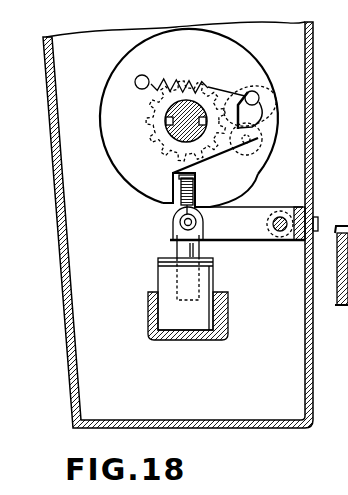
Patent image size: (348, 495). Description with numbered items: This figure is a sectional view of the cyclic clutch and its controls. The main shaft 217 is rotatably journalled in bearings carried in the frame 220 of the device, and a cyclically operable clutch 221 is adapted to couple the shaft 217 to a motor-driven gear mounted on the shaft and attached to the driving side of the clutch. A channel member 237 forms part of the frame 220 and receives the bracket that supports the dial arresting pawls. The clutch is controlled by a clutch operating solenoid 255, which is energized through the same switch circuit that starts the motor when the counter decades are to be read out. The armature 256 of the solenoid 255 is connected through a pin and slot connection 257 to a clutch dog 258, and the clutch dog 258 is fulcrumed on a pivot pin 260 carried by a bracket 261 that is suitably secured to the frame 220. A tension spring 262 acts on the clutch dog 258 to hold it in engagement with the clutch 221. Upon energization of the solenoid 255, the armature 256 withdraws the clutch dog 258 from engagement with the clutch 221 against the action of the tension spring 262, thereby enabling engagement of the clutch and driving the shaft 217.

The frame 220 is at (312, 170).
The cyclically operable clutch 221 is at (120, 56).
The main shaft 217 is at (177, 111).
The tension spring 262 is at (195, 187).
The clutch dog 258 is at (252, 216).
The bracket 261 is at (294, 210).
The pivot pin 260 is at (279, 233).
The pin and slot connection 257 is at (177, 222).
The armature 256 is at (178, 244).
The clutch operating solenoid 255 is at (166, 276).
The channel member 237 is at (184, 343).